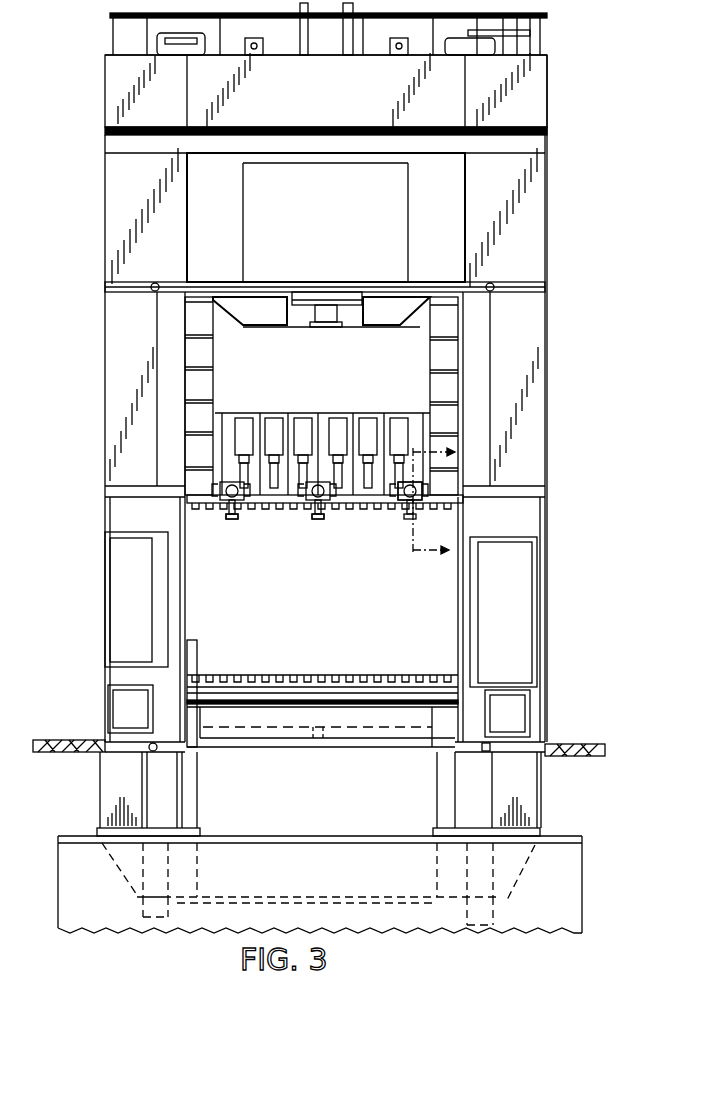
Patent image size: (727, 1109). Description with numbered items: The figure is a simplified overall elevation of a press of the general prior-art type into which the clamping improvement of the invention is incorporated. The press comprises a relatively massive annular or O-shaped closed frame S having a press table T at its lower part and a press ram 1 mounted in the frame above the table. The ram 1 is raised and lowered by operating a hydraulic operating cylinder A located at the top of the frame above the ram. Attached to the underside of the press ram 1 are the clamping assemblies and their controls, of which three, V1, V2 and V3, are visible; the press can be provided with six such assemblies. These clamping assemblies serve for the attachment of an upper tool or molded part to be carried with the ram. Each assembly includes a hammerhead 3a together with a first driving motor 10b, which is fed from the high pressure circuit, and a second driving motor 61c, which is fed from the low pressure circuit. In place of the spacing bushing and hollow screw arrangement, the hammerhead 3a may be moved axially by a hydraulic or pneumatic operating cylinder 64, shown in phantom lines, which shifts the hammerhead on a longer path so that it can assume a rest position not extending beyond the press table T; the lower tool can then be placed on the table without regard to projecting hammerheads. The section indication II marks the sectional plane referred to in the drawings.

The hydraulic operating cylinder A is at (337, 297).
The press ram 1 is at (330, 388).
The operating cylinder 64 is at (228, 480).
The second driving motor 61c is at (408, 482).
The clamping assembly V1 is at (232, 519).
The clamping assembly V2 is at (316, 519).
The clamping assembly V3 is at (407, 519).
The hammerhead 3a is at (233, 519).
The first driving motor 10b is at (322, 519).
The press table T is at (348, 722).
The closed frame S is at (548, 497).
The section line II- II is at (434, 499).